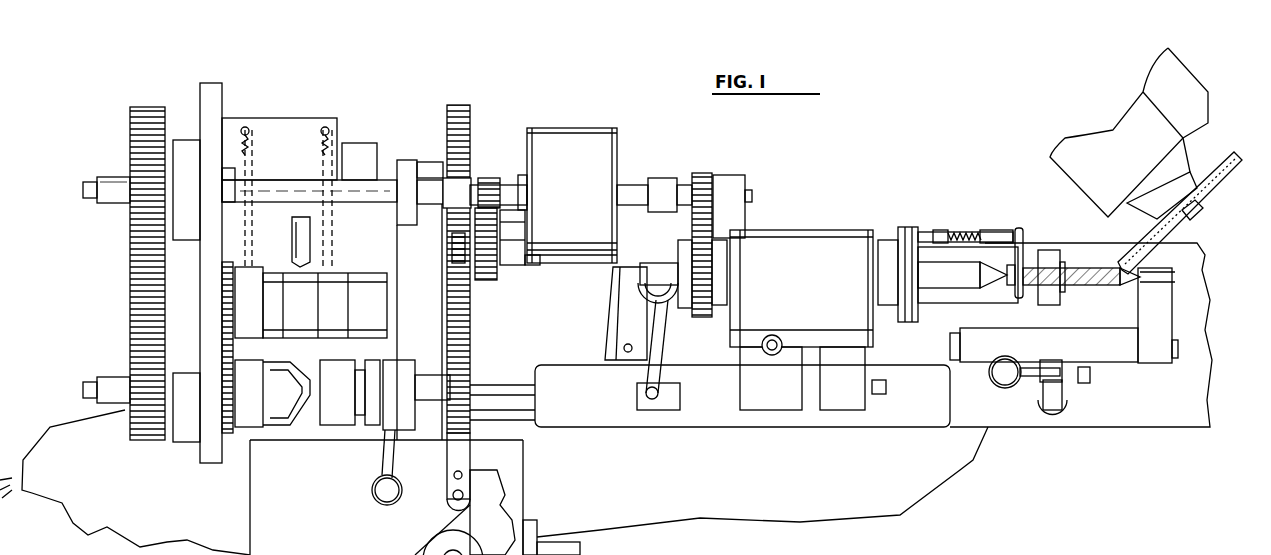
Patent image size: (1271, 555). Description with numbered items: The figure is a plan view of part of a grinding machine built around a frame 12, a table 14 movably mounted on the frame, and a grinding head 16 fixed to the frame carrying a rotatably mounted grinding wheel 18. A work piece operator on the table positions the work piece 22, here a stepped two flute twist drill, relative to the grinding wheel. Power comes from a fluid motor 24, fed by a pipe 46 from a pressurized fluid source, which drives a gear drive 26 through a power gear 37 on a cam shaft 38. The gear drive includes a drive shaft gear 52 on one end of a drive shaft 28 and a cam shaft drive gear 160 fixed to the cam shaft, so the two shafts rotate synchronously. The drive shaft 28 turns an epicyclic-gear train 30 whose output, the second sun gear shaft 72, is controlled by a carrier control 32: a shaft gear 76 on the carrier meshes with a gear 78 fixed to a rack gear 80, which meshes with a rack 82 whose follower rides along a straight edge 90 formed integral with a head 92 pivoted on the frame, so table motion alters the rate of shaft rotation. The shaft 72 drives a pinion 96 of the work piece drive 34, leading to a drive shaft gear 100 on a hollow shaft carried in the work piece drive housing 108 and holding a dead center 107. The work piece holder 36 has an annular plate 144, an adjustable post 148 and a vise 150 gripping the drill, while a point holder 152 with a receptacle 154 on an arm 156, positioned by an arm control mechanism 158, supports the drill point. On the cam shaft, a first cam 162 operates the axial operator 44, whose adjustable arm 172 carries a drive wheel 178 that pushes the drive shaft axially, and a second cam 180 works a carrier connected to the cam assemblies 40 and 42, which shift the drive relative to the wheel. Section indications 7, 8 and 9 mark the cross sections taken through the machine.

The section line 7-7 / frame block 7 is at (446, 153).
The section line 8- 8 is at (683, 230).
The section line 9- 9 is at (1147, 237).
The frame 12 is at (860, 482).
The table 14 is at (1015, 412).
The grinding head 16 is at (1190, 88).
The grinding wheel 18 is at (1213, 190).
The work piece 22 is at (1100, 287).
The fluid motor 24 is at (345, 272).
The gear drive 26 is at (128, 268).
The drive shaft 28 is at (270, 185).
The epicyclic-gear train 30 is at (570, 126).
The carrier control 32 is at (472, 300).
The work piece drive 34 is at (810, 230).
The work piece holder 36 is at (985, 222).
The power gear 37 is at (222, 440).
The cam shaft 38 is at (388, 382).
The first cam assembly 40 is at (778, 338).
The second cam assembly 42 is at (845, 352).
The axial operator 44 is at (632, 312).
The pipe 46 is at (300, 228).
The drive shaft gear 52 is at (130, 141).
The second sun gear shaft 72 is at (685, 178).
The shaft gear 76 is at (488, 180).
The gear 78 is at (495, 270).
The rack gear 80 is at (462, 262).
The rack 82 is at (466, 343).
The straight edge 90 is at (418, 551).
The head 92 is at (507, 540).
The pinion 96 is at (720, 175).
The drive shaft gear 100 is at (700, 265).
The dead center 107 is at (960, 283).
The work piece drive housing 108 is at (850, 240).
The annular plate 144 is at (912, 235).
The adjustable post 148 is at (945, 236).
The vise 150 is at (1019, 282).
The point holder 152 is at (1120, 362).
The receptacle 154 is at (1155, 285).
The arm 156 is at (1165, 325).
The arm control mechanism 158 is at (1105, 362).
The cam shaft drive gear 160 is at (147, 440).
The first cam 162 is at (245, 410).
The adjustable arm 172 is at (655, 341).
The drive wheel 178 is at (628, 292).
The second cam 180 is at (333, 425).